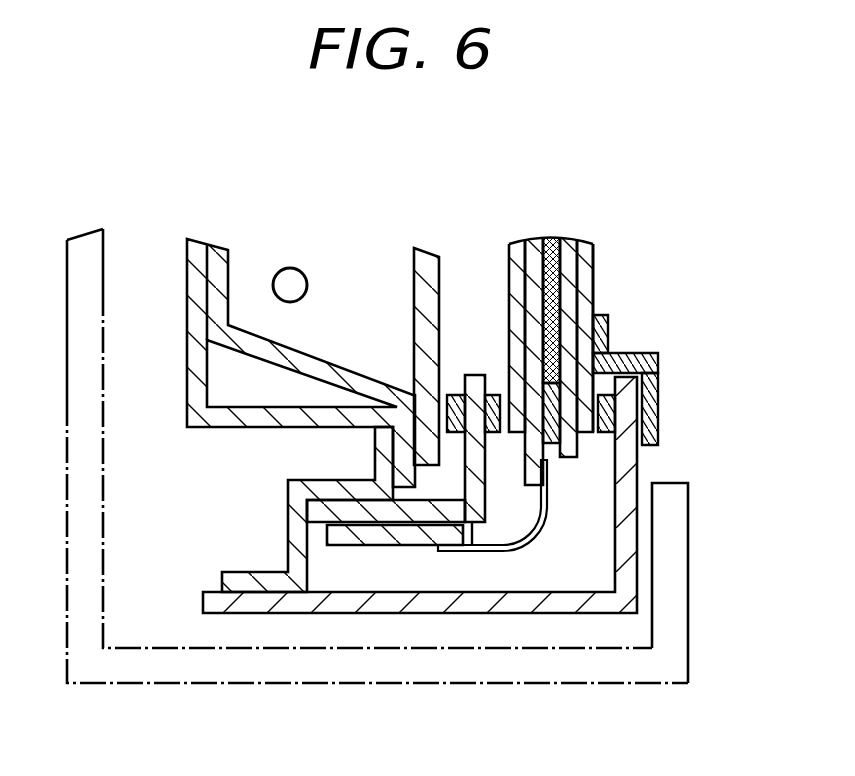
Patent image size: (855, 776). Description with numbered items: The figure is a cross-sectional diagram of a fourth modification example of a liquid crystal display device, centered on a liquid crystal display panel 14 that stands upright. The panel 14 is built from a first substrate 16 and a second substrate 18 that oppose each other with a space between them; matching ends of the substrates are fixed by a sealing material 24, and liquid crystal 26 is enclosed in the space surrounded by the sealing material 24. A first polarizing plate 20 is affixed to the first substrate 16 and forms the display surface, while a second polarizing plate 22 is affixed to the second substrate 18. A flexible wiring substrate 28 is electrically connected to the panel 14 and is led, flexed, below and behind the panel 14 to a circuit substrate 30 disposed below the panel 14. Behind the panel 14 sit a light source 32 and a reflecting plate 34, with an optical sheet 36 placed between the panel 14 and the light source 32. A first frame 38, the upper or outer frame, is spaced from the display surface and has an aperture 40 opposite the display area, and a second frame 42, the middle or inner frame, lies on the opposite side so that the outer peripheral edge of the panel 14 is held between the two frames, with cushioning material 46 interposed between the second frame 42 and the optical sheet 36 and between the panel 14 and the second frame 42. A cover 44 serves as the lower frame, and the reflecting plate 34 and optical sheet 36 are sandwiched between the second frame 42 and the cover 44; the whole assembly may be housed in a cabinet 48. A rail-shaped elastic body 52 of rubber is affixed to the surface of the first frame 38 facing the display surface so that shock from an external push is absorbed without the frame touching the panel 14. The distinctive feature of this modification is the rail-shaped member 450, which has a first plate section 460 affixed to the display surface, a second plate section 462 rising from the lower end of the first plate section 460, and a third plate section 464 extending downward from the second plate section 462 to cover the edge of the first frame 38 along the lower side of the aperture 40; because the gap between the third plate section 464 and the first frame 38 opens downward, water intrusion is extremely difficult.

The liquid crystal display panel 14 is at (636, 262).
The first substrate 16 is at (568, 238).
The second substrate 18 is at (533, 238).
The first polarizing plate 20 is at (585, 238).
The second polarizing plate 22 is at (512, 238).
The sealing material 24 is at (562, 440).
The liquid crystal 26 is at (551, 236).
The flexible wiring substrate 28 is at (537, 533).
The circuit substrate 30 is at (385, 547).
The light source 32 is at (290, 268).
The reflecting plate 34 is at (224, 250).
The optical sheet 36 is at (430, 248).
The first frame 38 is at (640, 597).
The aperture 40 is at (628, 292).
The second frame 42 is at (472, 522).
The cover 44 is at (187, 348).
The cushioning material 46 is at (493, 395).
The cabinet 48 is at (690, 545).
The elastic body 52 is at (618, 418).
The rail-shaped member 450 is at (712, 378).
The first plate section 460 is at (612, 318).
The second plate section 462 is at (637, 353).
The third plate section 464 is at (700, 409).